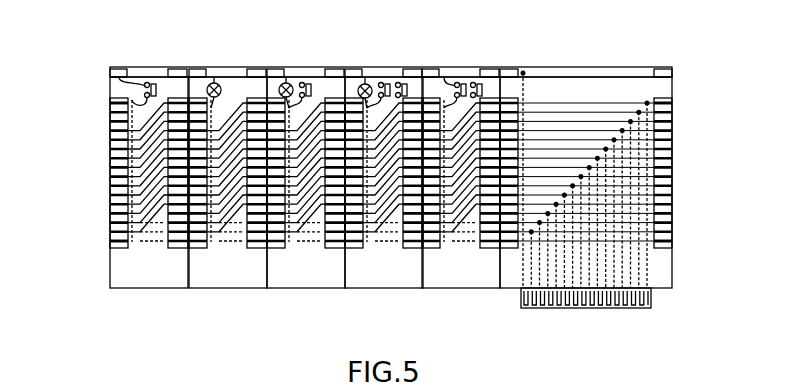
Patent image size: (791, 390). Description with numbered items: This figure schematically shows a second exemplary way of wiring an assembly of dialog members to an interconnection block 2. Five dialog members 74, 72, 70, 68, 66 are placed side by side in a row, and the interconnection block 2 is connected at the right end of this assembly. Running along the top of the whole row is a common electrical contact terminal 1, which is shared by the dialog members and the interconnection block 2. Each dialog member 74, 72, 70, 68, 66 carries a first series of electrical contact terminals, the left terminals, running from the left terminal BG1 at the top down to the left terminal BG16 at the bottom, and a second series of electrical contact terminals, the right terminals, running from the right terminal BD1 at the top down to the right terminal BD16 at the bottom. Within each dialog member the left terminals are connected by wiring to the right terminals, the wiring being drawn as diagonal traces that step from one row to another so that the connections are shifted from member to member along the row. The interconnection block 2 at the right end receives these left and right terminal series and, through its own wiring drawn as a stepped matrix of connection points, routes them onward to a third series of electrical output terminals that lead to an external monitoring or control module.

The common electrical contact terminal 1 is at (112, 72).
The interconnection block 2 is at (625, 70).
The dialog member 74 is at (155, 266).
The dialog member 72 is at (230, 266).
The dialog member 70 is at (303, 266).
The dialog member 68 is at (380, 266).
The dialog member 66 is at (458, 266).
The left terminal BG1 is at (112, 100).
The left terminal BG16 is at (115, 243).
The right terminal BD1 is at (672, 102).
The right terminal BD16 is at (668, 243).